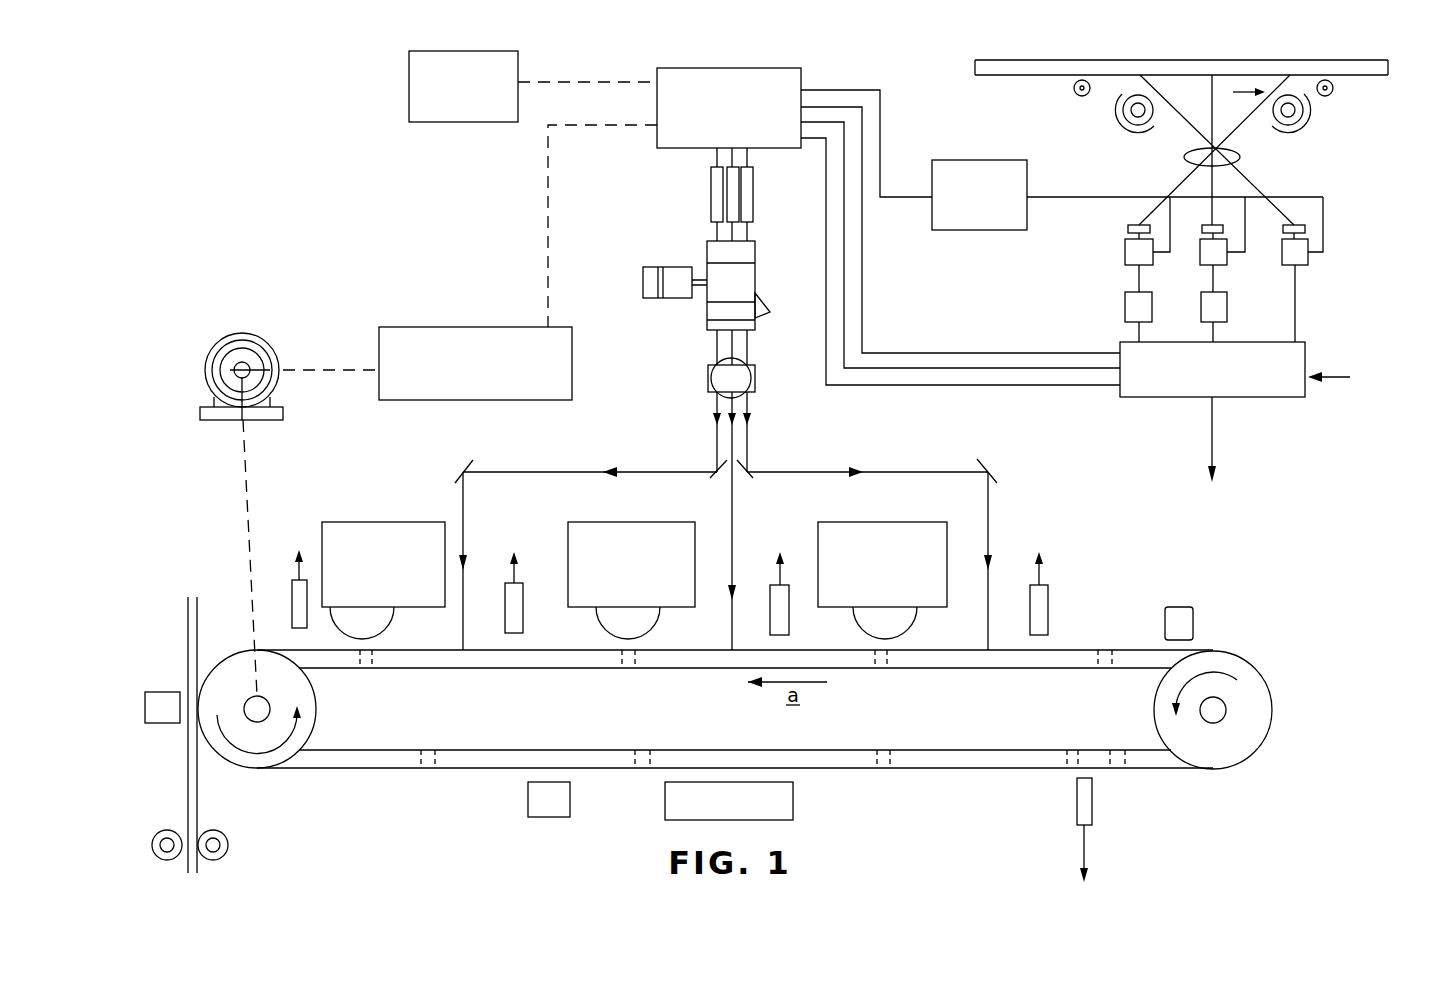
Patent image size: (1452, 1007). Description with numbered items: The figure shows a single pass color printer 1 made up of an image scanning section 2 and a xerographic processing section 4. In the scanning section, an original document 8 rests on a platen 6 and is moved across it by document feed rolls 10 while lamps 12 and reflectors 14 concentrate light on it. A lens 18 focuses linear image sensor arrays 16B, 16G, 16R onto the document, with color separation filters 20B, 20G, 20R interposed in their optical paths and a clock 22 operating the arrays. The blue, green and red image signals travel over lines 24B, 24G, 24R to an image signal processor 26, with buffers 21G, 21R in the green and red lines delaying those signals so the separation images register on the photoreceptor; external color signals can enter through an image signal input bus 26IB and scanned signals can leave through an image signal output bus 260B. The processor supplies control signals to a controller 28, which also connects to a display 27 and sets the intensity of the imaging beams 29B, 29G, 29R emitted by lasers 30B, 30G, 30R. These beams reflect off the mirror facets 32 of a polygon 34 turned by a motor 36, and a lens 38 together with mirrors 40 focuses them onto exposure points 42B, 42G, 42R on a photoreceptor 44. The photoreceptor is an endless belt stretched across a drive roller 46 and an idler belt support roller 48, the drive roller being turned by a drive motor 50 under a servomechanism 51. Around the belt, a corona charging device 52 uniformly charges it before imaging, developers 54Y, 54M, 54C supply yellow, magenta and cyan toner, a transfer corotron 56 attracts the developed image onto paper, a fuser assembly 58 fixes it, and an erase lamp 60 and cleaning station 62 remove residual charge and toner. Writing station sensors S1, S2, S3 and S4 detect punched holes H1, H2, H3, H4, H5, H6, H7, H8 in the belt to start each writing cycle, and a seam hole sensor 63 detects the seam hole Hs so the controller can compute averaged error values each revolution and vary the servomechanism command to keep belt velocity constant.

The single pass color printer 1 is at (360, 130).
The image scanning section 2 is at (1375, 296).
The xerographic processing section 4 is at (1315, 592).
The platen 6 is at (998, 80).
The original document 8 is at (1120, 80).
The document feed rolls 10 is at (1078, 96).
The document illuminating means 12 is at (1150, 110).
The reflectors 14 is at (1128, 124).
The red linear image sensor array 16R is at (1125, 252).
The green linear image sensor array 16G is at (1200, 252).
The blue linear image sensor array 16B is at (1308, 256).
The lens 18 is at (1190, 158).
The red color separation filter 20R is at (1134, 225).
The green color separation filter 20G is at (1218, 225).
The blue color separation filter 20B is at (1300, 224).
The red signal buffer 21R is at (1125, 310).
The green signal buffer 21G is at (1201, 306).
The clock 22 is at (937, 175).
The red image signal line 24R is at (1139, 280).
The green image signal line 24G is at (1213, 280).
The blue image signal line 24B is at (1295, 315).
The image signal processor 26 is at (1240, 397).
The image signal input bus 26IB is at (1335, 377).
The image signal output bus 260B is at (1212, 443).
The display 27 is at (487, 122).
The controller 28 is at (801, 76).
The red imaging beam 29R is at (713, 442).
The green imaging beam 29G is at (735, 524).
The blue imaging beam 29B is at (750, 442).
The red laser 30R is at (708, 198).
The green laser 30G is at (733, 205).
The blue laser 30B is at (755, 182).
The mirror facets 32 is at (770, 312).
The polygon 34 is at (757, 277).
The motor 36 is at (673, 298).
The lens 38 is at (755, 382).
The mirrors 40 is at (460, 463).
The red exposure point 42R is at (465, 662).
The green exposure point 42G is at (728, 662).
The blue exposure point 42B is at (982, 662).
The photoreceptor 44 is at (1003, 770).
The drive roller 46 is at (312, 706).
The idler belt support roller 48 is at (1262, 702).
The drive motor 50 is at (262, 348).
The servomechanism 51 is at (573, 358).
The corona charging device 52 is at (1181, 607).
The third color developer 54C is at (385, 524).
The second developer 54M is at (623, 526).
The first color developer 54Y is at (885, 527).
The transfer corotron 56 is at (166, 692).
The fuser assembly 58 is at (165, 815).
The erase lamp 60 is at (550, 810).
The cleaning station 62 is at (794, 805).
The seam hole sensor 63 is at (1077, 815).
The writing station sensor S1 is at (1048, 619).
The writing station sensor S2 is at (789, 620).
The writing station sensor S3 is at (523, 621).
The sensor S4 is at (292, 616).
The punched hole H1 is at (1104, 668).
The punched hole H2 is at (1117, 768).
The punched hole H3 is at (883, 768).
The punched hole H4 is at (642, 768).
The punched hole H5 is at (428, 768).
The punched hole H6 is at (366, 668).
The punched hole H7 is at (628, 668).
The punched hole H8 is at (880, 668).
The seam hole Hs is at (1072, 750).